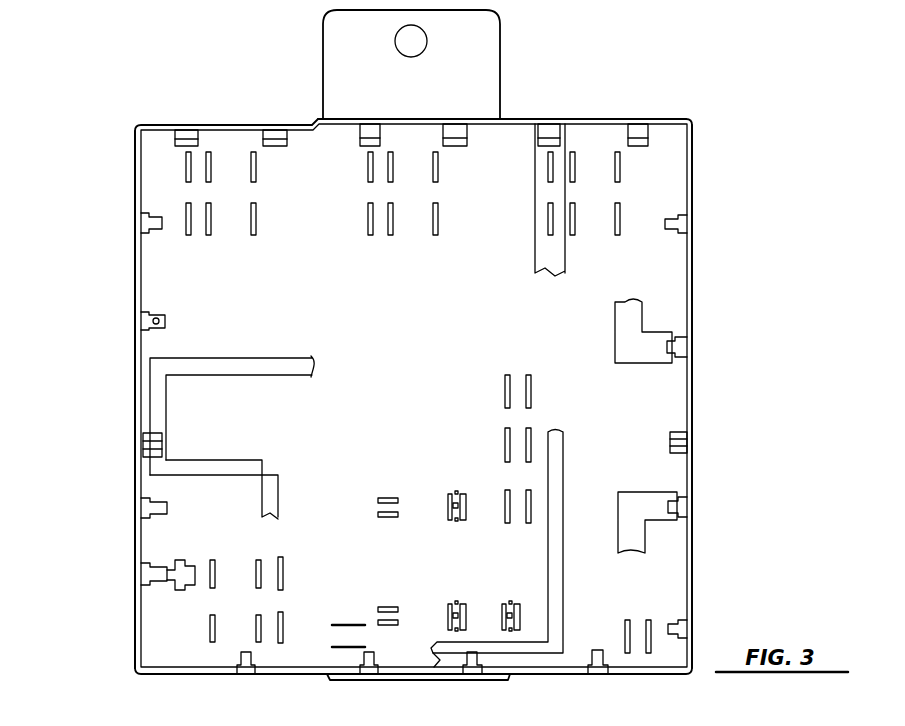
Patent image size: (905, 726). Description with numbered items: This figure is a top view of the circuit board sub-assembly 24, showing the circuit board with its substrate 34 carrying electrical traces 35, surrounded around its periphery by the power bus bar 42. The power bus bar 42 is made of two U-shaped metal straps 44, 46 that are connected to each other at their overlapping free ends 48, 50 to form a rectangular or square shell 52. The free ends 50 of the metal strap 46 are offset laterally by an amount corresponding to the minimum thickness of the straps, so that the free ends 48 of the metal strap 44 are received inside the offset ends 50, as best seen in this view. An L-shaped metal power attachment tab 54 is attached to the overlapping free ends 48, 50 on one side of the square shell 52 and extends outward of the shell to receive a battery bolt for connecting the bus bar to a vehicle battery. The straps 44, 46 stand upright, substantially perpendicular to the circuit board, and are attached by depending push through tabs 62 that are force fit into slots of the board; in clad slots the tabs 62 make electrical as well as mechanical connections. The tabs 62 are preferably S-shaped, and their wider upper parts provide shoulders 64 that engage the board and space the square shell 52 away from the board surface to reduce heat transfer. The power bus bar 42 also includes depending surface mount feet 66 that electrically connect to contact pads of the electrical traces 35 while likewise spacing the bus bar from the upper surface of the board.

The circuit board sub-assembly 24 is at (119, 618).
The substrate 34 is at (668, 292).
The electrical traces 35 is at (238, 365).
The power bus bar 42 is at (243, 121).
The U-shaped metal strap 44 is at (690, 395).
The U-shaped metal strap 46 is at (135, 418).
The free ends 48 is at (428, 125).
The free ends 50 is at (340, 119).
The square shell 52 is at (475, 428).
The L-shaped metal power attachment tab 54 is at (485, 72).
The push through tabs 62 is at (360, 146).
The shoulders 64 is at (672, 350).
The surface mount feet 66 is at (168, 507).